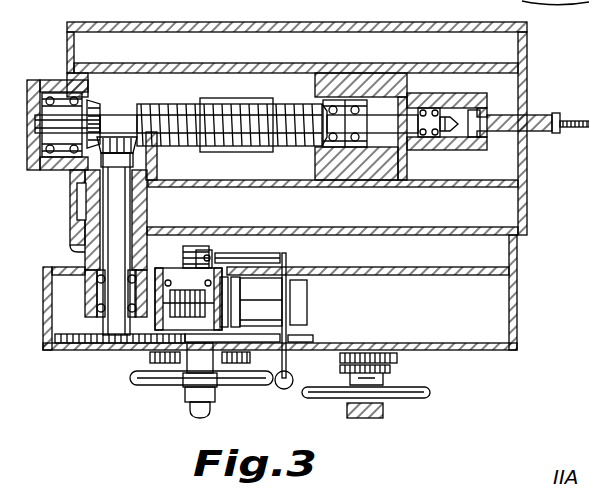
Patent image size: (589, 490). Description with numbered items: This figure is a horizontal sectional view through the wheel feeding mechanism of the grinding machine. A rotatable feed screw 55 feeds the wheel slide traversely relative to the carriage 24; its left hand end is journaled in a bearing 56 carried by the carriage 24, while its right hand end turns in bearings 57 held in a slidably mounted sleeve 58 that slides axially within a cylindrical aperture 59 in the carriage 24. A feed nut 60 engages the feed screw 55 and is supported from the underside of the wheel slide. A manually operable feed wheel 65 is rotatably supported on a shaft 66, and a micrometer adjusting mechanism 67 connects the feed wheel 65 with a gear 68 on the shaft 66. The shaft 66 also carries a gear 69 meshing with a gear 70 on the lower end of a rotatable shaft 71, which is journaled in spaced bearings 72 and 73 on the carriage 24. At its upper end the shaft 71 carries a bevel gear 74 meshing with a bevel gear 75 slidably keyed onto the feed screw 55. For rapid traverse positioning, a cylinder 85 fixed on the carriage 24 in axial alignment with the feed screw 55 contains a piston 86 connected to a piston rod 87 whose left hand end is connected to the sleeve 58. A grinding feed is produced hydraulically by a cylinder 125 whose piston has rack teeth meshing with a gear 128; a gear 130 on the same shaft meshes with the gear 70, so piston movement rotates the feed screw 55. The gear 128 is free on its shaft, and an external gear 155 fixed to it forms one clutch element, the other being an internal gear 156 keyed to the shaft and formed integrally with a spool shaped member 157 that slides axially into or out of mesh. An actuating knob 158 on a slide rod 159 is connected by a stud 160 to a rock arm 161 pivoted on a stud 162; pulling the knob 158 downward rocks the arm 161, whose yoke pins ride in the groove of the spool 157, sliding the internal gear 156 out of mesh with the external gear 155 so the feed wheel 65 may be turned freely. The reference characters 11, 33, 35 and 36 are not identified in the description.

The apparatus 11 is at (539, 225).
The carriage 24 is at (532, 185).
The rod 33 is at (430, 398).
The gear 35 is at (373, 356).
The rack 36 is at (390, 368).
The feed screw 55 is at (170, 113).
The bearing 56 is at (53, 97).
The bearings 57 is at (320, 143).
The slidably mounted sleeve 58 is at (340, 168).
The cylindrical aperture 59 is at (395, 165).
The feed nut 60 is at (238, 101).
The feed wheel 65 is at (150, 386).
The shaft 66 is at (225, 382).
The micrometer adjusting mechanism 67 is at (186, 400).
The gear 68 is at (148, 358).
The gear 69 is at (212, 403).
The gear 70 is at (82, 344).
The rotatable shaft 71 is at (113, 255).
The bearing 72 is at (95, 288).
The bearing 73 is at (88, 173).
The bevel gear 74 is at (140, 152).
The bevel gear 75 is at (92, 110).
The cylinder 85 is at (470, 145).
The piston 86 is at (425, 138).
The piston rod 87 is at (407, 98).
The cylinder 125 is at (307, 294).
The gear 128 is at (208, 296).
The gear 130 is at (230, 333).
The external gear 155 is at (174, 323).
The internal gear 156 is at (161, 267).
The spool shaped member 157 is at (191, 246).
The actuating knob 158 is at (285, 390).
The slide rod 159 is at (318, 330).
The stud 160 is at (284, 253).
The rock arm 161 is at (247, 252).
The stud 162 is at (212, 249).